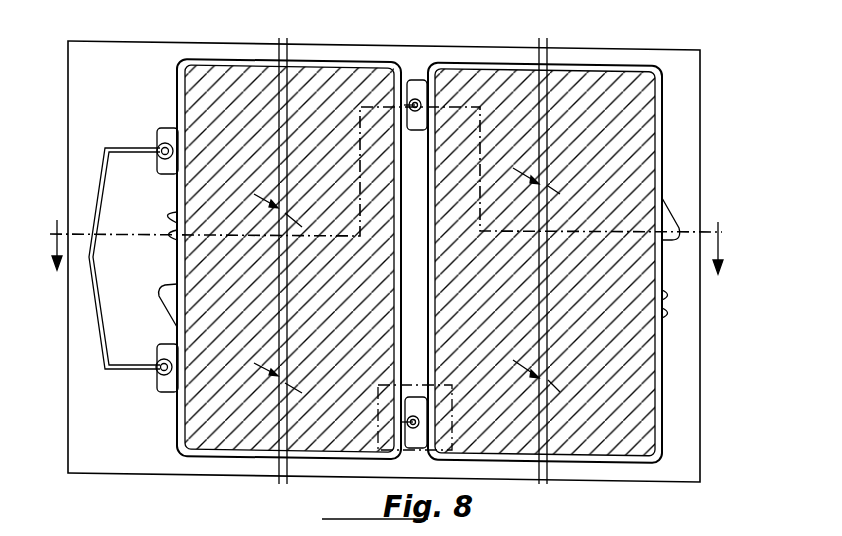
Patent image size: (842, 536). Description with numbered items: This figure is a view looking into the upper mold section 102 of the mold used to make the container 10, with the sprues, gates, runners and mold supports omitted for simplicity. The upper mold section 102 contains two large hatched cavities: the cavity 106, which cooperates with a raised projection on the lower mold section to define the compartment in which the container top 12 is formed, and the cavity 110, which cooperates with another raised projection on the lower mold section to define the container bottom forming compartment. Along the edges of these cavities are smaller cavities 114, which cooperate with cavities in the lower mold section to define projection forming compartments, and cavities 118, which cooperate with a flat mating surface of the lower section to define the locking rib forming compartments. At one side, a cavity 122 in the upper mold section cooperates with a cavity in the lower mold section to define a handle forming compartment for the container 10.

The upper mold section 102 is at (146, 40).
The cavity 110 is at (224, 67).
The cavity 106 is at (645, 123).
The cavity 122 is at (123, 148).
The cavities 118 is at (172, 219).
The cavities 114 is at (165, 287).
The container top 12 is at (450, 380).
The container 10 is at (386, 207).